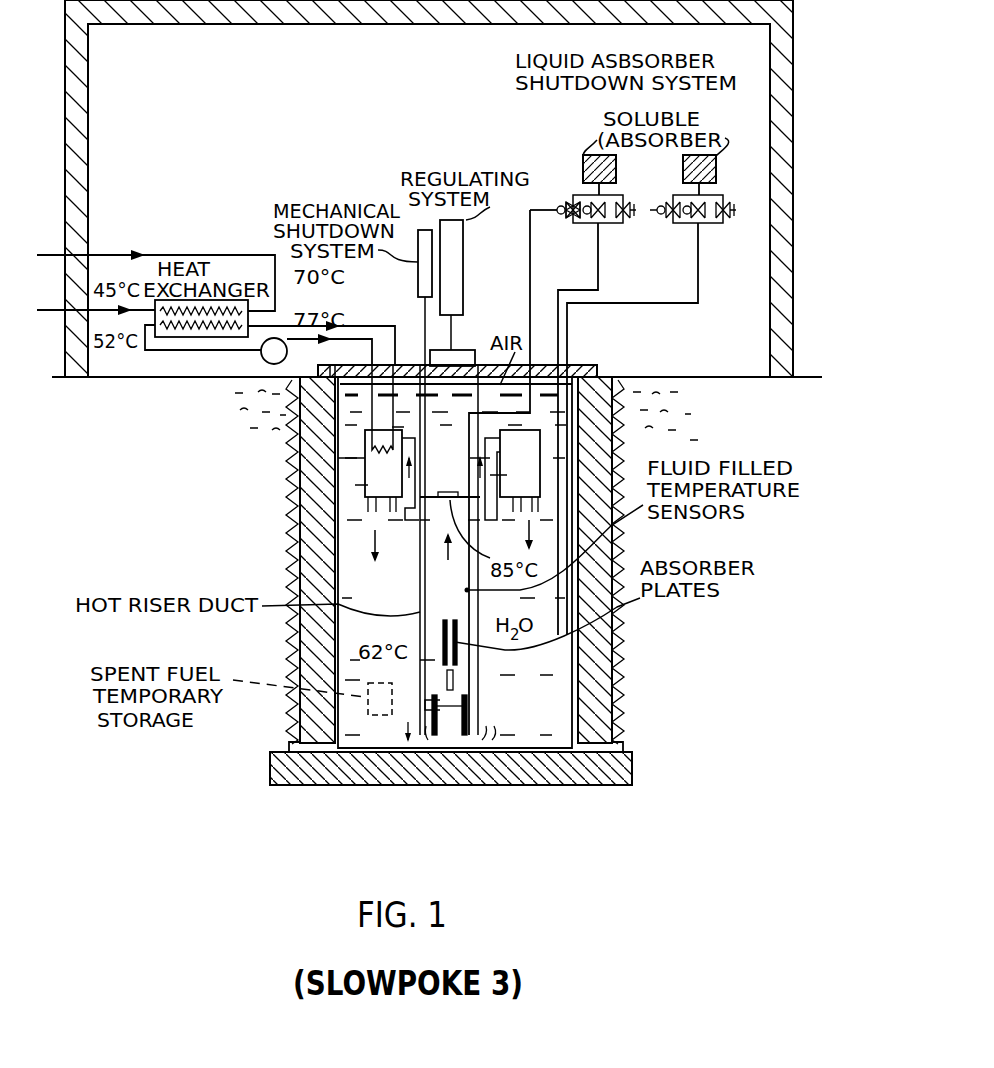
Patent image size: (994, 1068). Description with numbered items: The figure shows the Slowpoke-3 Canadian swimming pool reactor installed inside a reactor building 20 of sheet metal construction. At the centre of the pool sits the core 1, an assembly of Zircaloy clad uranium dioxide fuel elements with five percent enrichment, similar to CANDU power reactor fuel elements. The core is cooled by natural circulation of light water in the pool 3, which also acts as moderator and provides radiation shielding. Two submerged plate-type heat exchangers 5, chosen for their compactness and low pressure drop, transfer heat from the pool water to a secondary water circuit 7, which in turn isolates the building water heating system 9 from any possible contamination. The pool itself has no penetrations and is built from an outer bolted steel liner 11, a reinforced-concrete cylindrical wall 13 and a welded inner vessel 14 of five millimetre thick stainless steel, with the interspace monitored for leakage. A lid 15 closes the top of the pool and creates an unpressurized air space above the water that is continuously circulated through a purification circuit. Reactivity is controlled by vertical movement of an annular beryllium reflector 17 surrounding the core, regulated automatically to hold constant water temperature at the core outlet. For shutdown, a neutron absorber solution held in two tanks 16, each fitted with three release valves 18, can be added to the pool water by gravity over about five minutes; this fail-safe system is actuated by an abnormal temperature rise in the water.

The reactor building 20 is at (256, 26).
The building water heating system 9 is at (158, 255).
The secondary water circuit 7 is at (155, 352).
The tanks 16 is at (683, 172).
The release valves 18 is at (673, 225).
The lid 15 is at (598, 366).
The outer bolted steel liner 11 is at (300, 646).
The inner vessel 14 is at (338, 483).
The reinforced-concrete cylindrical wall 13 is at (312, 518).
The pool 3 is at (362, 573).
The plate-type heat exchangers 5 is at (338, 458).
The core 1 is at (453, 677).
The annular beryllium reflector 17 is at (467, 720).